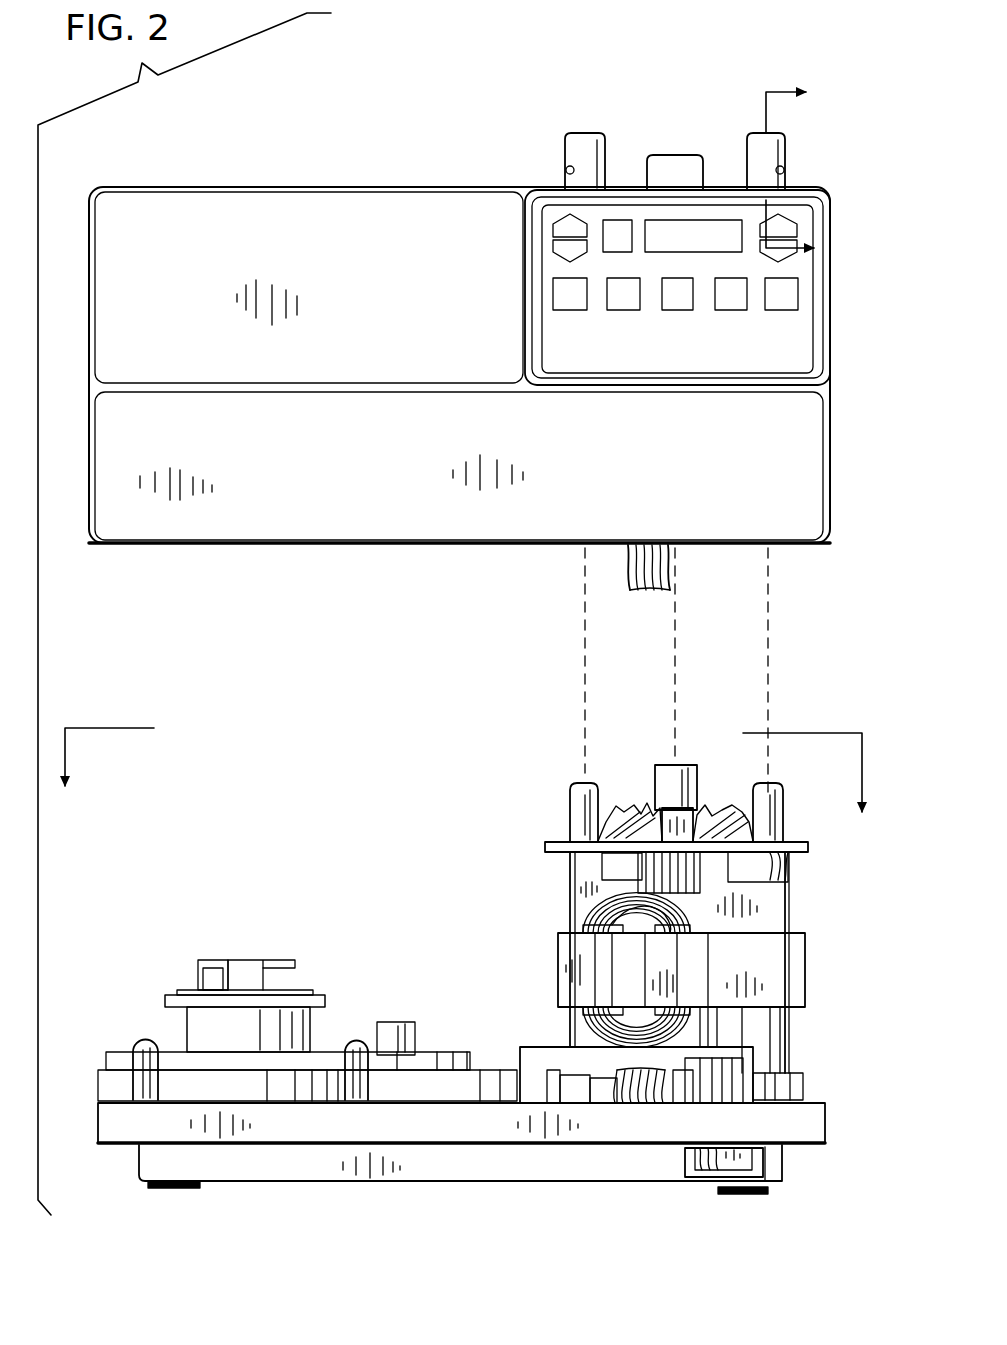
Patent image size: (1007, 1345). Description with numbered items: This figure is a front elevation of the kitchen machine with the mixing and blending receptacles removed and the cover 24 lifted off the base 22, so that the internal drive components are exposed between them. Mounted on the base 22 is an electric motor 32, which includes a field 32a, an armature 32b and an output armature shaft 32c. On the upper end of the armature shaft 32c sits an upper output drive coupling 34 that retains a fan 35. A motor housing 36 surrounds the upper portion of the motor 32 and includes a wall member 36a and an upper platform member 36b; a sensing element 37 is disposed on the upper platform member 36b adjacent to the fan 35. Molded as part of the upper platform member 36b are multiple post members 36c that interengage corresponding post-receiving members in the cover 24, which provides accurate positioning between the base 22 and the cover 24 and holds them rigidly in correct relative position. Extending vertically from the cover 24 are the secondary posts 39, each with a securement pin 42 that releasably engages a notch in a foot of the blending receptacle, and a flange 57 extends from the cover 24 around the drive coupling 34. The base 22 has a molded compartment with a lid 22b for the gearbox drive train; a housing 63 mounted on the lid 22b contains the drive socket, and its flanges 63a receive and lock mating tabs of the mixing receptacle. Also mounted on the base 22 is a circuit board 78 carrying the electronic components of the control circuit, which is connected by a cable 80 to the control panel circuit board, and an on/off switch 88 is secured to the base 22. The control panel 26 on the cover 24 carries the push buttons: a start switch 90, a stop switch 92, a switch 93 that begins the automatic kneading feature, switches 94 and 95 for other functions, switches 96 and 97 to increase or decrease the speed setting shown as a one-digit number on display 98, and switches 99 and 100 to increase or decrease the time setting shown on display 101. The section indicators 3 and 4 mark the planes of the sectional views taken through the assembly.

The section line 3- 3 is at (474, 770).
The section line 4- 4 is at (790, 173).
The base 22 is at (598, 1172).
The lid 22b is at (410, 1085).
The cover 24 is at (800, 445).
The control panel 26 is at (807, 273).
The electric motor 32 is at (674, 976).
The field 32a is at (567, 944).
The armature 32b is at (605, 868).
The output armature shaft 32c is at (683, 1043).
The upper output drive coupling 34 is at (684, 768).
The fan 35 is at (733, 807).
The motor housing 36 is at (652, 923).
The wall member 36a is at (585, 898).
The upper platform member 36b is at (552, 845).
The post members 36c is at (570, 795).
The sensing element 37 is at (713, 810).
The secondary posts 39 is at (565, 135).
The securement pin 42 is at (567, 170).
The flange 57 is at (684, 155).
The housing 63 is at (207, 972).
The flanges 63a is at (278, 961).
The circuit board 78 is at (548, 1045).
The cable 80 is at (625, 572).
The on/off switch 88 is at (683, 1155).
The start switch 90 is at (575, 308).
The stop switch 92 is at (780, 307).
The automatic kneading switch 93 is at (727, 307).
The switch 94 is at (672, 307).
The switch 95 is at (632, 307).
The speed increase switch 96 is at (555, 227).
The speed decrease switch 97 is at (552, 254).
The speed display 98 is at (608, 252).
The time increase switch 99 is at (829, 217).
The time decrease switch 100 is at (775, 262).
The time display 101 is at (693, 248).